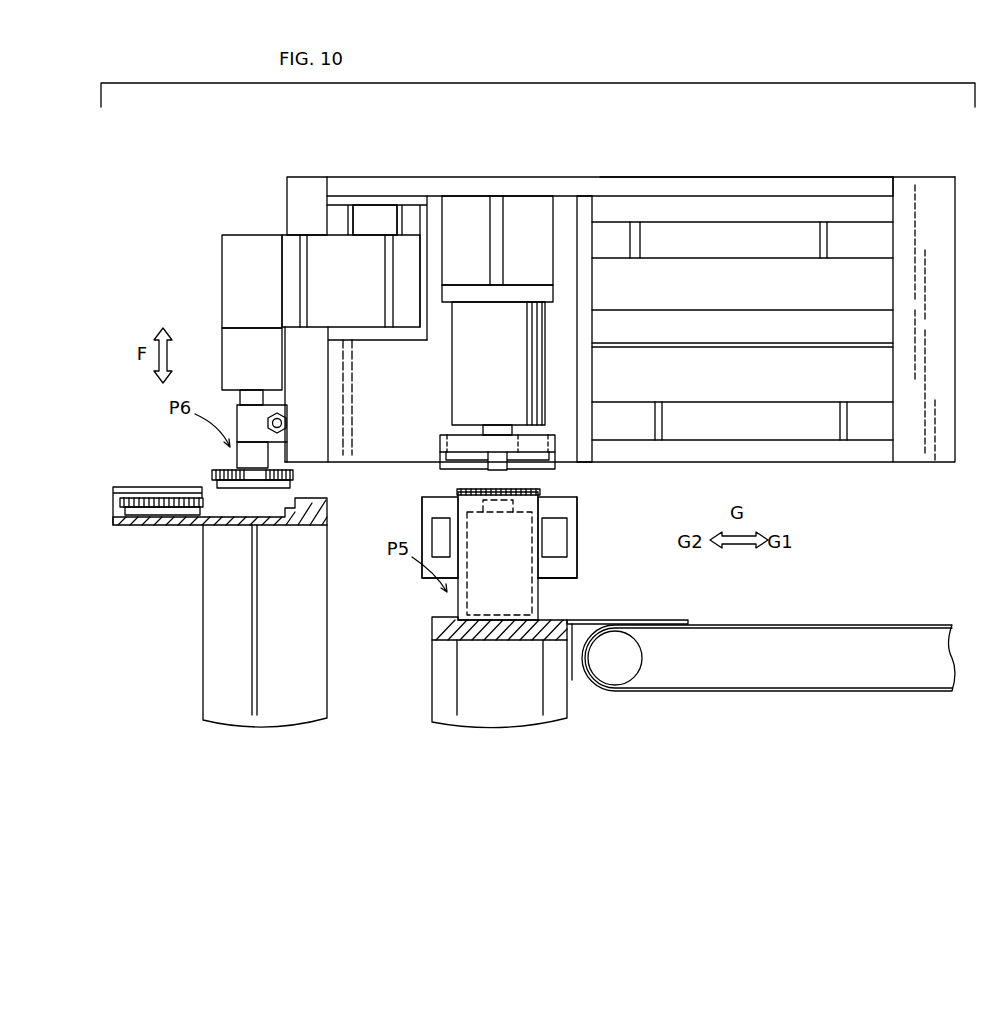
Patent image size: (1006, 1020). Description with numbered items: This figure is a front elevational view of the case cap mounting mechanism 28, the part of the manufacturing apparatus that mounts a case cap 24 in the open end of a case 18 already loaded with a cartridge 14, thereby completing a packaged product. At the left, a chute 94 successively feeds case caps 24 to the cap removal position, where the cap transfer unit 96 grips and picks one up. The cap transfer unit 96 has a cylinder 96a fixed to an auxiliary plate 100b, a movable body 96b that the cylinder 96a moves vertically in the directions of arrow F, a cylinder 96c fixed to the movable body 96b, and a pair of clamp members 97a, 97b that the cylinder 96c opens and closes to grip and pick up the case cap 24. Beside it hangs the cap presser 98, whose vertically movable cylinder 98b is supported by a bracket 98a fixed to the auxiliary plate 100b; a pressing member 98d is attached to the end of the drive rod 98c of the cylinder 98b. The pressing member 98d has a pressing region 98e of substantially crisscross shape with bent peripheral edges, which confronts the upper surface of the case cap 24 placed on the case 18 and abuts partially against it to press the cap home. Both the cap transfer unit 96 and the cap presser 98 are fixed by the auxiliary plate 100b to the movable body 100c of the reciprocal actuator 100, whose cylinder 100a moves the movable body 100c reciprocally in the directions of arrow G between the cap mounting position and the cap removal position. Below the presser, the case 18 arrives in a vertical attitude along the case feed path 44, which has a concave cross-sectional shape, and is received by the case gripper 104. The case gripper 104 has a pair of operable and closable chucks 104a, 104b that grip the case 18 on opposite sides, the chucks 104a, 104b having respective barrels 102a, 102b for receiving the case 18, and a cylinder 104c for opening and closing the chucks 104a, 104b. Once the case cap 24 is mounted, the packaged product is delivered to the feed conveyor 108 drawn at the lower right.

The cartridge 14 is at (455, 606).
The case 18 is at (538, 607).
The case cap 24 is at (146, 516).
The case cap mounting mechanism 28 is at (746, 168).
The case feed path 44 is at (497, 636).
The chute 94 is at (130, 490).
The cap transfer unit 96 is at (256, 229).
The cylinder 96a is at (371, 213).
The movable body 96b is at (315, 243).
The cylinder 96c is at (237, 281).
The clamp member 97a is at (240, 465).
The clamp member 97b is at (217, 439).
The cap presser 98 is at (476, 188).
The bracket 98a is at (496, 203).
The cylinder 98b is at (462, 371).
The drive rod 98c is at (497, 430).
The pressing member 98d is at (455, 446).
The pressing region 98e is at (530, 468).
The reciprocal actuator 100 is at (912, 171).
The cylinder 100a is at (838, 178).
The auxiliary plate 100b is at (570, 294).
The movable body 100c is at (583, 200).
The barrel 102a is at (543, 527).
The barrel 102b is at (450, 528).
The case gripper 104 is at (586, 509).
The chuck 104a is at (562, 540).
The chuck 104b is at (440, 540).
The cylinder 104c is at (567, 568).
The feed conveyor 108 is at (862, 624).